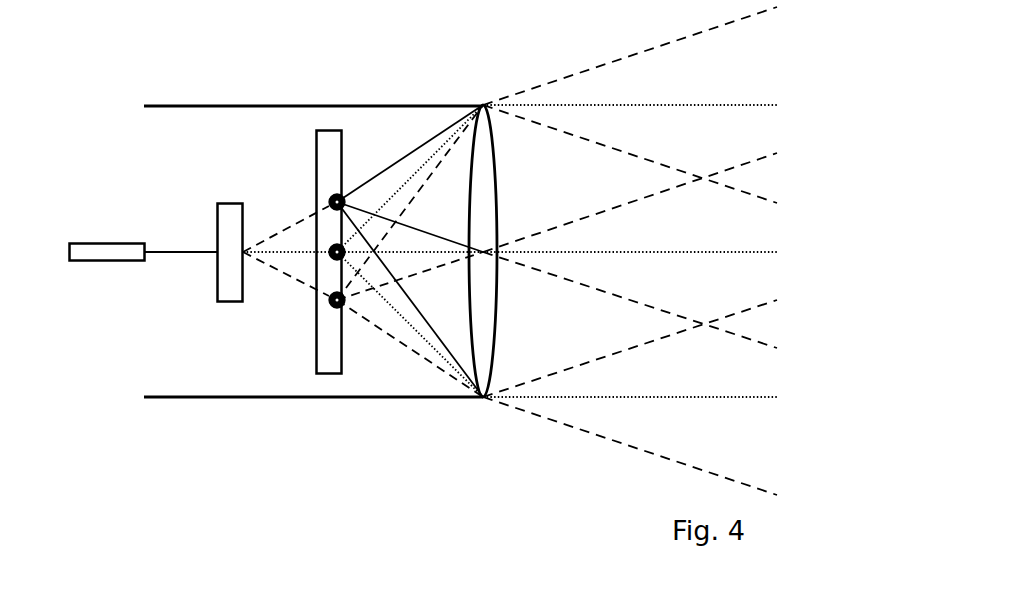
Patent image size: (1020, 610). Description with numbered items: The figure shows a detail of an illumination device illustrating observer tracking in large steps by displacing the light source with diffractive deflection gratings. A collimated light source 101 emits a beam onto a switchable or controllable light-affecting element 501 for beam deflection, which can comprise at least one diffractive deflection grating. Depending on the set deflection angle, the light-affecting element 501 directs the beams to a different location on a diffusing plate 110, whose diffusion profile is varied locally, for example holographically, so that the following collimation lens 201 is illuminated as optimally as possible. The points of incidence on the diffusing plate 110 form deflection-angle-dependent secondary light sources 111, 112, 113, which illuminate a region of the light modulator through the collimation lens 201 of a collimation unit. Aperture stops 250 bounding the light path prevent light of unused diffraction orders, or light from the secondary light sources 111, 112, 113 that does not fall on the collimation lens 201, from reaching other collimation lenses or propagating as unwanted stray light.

The collimated light source 101 is at (120, 253).
The light-affecting element 501 is at (217, 228).
The diffusing plate 110 is at (340, 155).
The secondary light source 111 is at (330, 198).
The secondary light source 112 is at (334, 247).
The secondary light source 113 is at (328, 298).
The collimation lens 201 is at (487, 205).
The aperture stop 250 is at (375, 105).